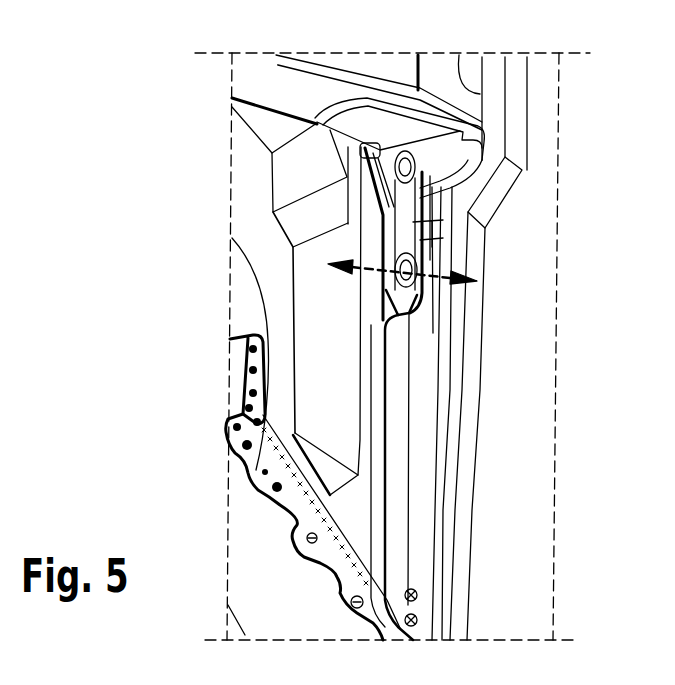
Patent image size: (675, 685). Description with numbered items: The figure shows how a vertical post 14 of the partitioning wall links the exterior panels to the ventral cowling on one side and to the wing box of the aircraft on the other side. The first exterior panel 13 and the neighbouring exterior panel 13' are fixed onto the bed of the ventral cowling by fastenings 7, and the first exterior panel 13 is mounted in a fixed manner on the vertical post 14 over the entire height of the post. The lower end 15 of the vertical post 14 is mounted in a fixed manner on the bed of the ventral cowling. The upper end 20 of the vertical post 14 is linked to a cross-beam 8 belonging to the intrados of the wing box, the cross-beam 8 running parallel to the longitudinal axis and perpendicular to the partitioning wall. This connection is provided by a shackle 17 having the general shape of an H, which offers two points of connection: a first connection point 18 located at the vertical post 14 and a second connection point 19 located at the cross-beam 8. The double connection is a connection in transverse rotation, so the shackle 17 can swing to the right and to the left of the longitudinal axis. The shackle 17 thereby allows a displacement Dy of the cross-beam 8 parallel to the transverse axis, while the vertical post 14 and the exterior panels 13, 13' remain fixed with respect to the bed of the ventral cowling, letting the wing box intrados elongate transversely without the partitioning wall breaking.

The fastenings 7 is at (270, 503).
The cross-beam 8 is at (380, 86).
The first exterior panel 13 is at (527, 398).
The exterior panel 13' is at (328, 347).
The vertical post 14 is at (420, 403).
The lower end 15 is at (393, 600).
The shackle 17 is at (413, 223).
The first connection point 18 is at (393, 268).
The second connection point 19 is at (415, 161).
The upper end 20 is at (414, 298).
The displacement Dy is at (453, 272).